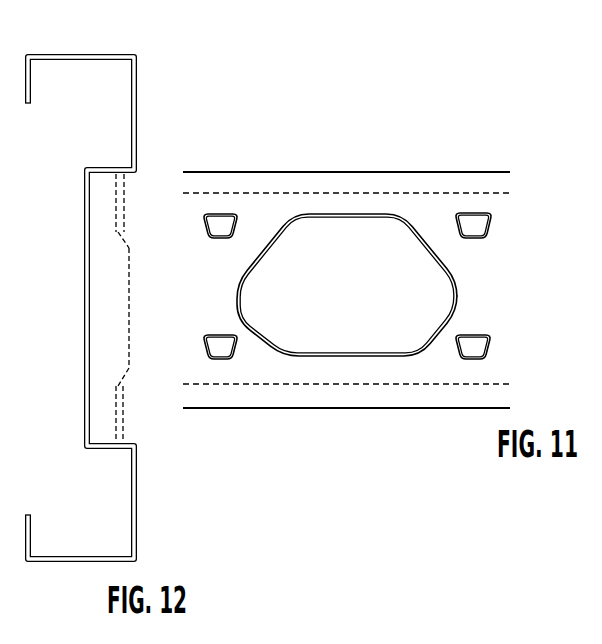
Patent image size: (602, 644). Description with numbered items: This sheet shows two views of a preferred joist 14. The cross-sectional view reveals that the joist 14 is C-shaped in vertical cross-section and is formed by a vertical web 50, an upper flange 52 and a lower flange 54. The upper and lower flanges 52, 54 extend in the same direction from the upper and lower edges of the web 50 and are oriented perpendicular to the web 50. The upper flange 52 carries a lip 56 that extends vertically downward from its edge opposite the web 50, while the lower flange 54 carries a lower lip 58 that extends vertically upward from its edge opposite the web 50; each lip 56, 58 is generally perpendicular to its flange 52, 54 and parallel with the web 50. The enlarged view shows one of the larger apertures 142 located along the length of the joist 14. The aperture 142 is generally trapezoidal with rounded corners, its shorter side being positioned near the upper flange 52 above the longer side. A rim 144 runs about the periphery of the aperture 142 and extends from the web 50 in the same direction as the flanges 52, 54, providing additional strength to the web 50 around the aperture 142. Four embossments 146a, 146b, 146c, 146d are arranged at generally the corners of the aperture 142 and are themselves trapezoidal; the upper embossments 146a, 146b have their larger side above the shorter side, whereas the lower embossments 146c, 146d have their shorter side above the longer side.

In FIG. 11, the joist 14 is at (386, 172).
In FIG. 12, the joist 14 is at (153, 62).
In FIG. 12, the web portion 50 is at (138, 113).
In FIG. 12, the upper flange 52 is at (58, 54).
In FIG. 12, the lower flange 54 is at (47, 563).
In FIG. 12, the lip 56 is at (33, 84).
In FIG. 12, the lower lip 58 is at (32, 522).
In FIG. 11, the aperture 142 is at (333, 358).
In FIG. 12, the rim 144 is at (102, 450).
In FIG. 11, the upper embossment 146a is at (204, 222).
In FIG. 11, the upper embossment 146b is at (491, 227).
In FIG. 11, the lower embossment 146c is at (490, 348).
In FIG. 11, the lower embossment 146d is at (204, 348).